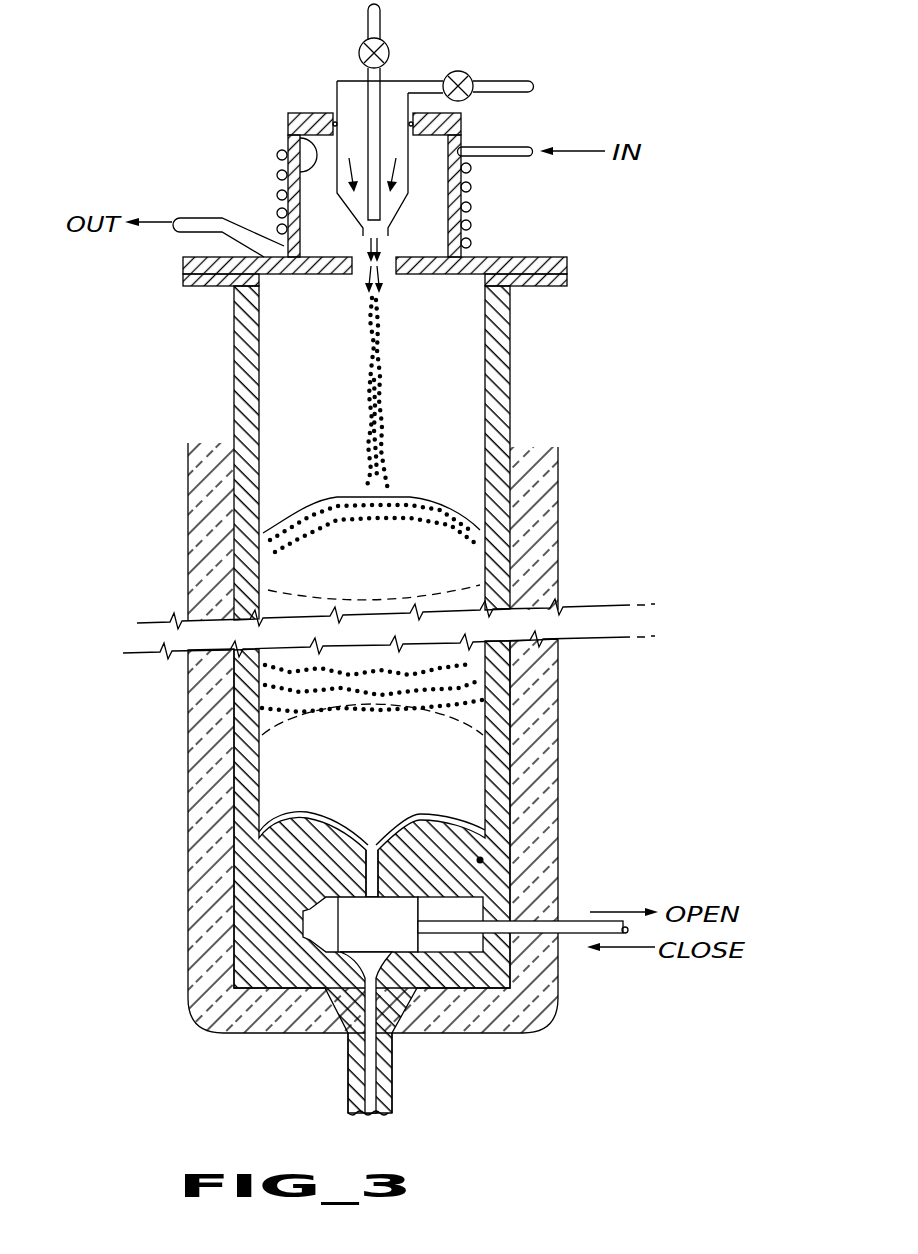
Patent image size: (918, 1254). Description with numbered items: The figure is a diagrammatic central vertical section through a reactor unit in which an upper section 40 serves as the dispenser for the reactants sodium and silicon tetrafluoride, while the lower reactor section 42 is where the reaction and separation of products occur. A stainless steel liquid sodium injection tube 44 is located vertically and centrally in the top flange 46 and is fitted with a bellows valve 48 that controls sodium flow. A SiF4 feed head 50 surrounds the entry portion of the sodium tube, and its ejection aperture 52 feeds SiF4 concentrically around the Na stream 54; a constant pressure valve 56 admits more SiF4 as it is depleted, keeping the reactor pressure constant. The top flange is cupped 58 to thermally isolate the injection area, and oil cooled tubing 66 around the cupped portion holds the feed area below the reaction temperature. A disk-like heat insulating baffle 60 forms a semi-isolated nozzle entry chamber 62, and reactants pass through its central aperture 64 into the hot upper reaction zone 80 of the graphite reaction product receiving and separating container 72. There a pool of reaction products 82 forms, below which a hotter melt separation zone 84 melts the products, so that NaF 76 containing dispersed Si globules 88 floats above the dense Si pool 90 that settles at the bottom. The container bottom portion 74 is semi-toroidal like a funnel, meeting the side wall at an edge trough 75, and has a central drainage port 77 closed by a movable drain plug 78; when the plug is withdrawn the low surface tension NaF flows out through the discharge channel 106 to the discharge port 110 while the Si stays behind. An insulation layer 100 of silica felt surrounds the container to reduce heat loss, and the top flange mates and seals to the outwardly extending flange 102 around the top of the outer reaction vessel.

The upper section 40 is at (702, 129).
The lower reactor section 42 is at (153, 401).
The liquid sodium injection tube 44 is at (383, 71).
The top flange 46 is at (462, 127).
The bellows valve 48 is at (384, 42).
The SiF4 feed head 50 is at (337, 175).
The ejection aperture 52 is at (383, 230).
The Na stream 54 is at (364, 234).
The constant pressure valve 56 is at (468, 75).
The cupped portion 58 is at (303, 150).
The heat insulating baffle 60 is at (436, 274).
The nozzle entry chamber 62 is at (366, 272).
The aperture 64 is at (385, 276).
The oil cooled tubing 66 is at (472, 190).
The reaction product receiving and separating container 72 is at (500, 527).
The bottom portion 74 is at (282, 840).
The edge trough 75 is at (482, 860).
The NaF 76 is at (398, 832).
The drainage port 77 is at (366, 850).
The movable drain plug 78 is at (347, 943).
The upper reaction zone 80 is at (442, 455).
The pool of reaction products 82 is at (376, 586).
The melt separation zone 84 is at (397, 678).
The NaF with dispersed Si globules 88 is at (296, 611).
The Si pool 90 is at (390, 791).
The insulation layer 100 is at (196, 520).
The outer reaction vessel flange 102 is at (543, 286).
The discharge channel 106 is at (382, 1058).
The discharge port 110 is at (390, 1098).